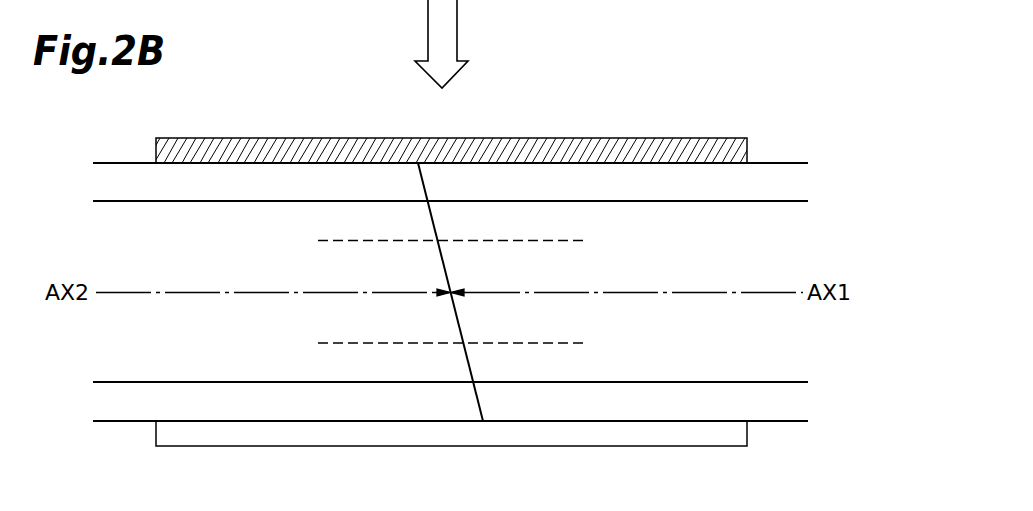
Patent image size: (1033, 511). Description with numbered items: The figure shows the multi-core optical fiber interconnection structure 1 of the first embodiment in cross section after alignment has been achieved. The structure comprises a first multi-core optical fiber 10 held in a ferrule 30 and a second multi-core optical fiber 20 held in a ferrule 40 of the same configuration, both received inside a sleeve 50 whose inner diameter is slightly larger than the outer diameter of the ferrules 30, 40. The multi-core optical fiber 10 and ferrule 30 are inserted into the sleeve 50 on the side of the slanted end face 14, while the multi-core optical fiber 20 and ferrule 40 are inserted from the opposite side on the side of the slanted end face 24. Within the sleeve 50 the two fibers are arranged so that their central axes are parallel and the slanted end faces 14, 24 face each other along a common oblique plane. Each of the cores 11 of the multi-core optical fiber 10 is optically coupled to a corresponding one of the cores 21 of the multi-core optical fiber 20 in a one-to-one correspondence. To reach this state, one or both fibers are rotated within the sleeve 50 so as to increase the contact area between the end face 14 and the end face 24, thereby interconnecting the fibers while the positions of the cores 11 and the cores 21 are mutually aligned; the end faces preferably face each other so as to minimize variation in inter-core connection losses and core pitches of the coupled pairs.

The multi-core optical fiber interconnection structure 1 is at (727, 116).
The first multi-core optical fiber 10 is at (688, 247).
The cores 11 is at (494, 240).
The slanted end face 14 is at (472, 368).
The second multi-core optical fiber 20 is at (264, 215).
The cores 21 is at (389, 240).
The slanted end face 24 is at (455, 311).
The ferrule 30 is at (773, 170).
The ferrule 40 is at (325, 185).
The sleeve 50 is at (602, 150).